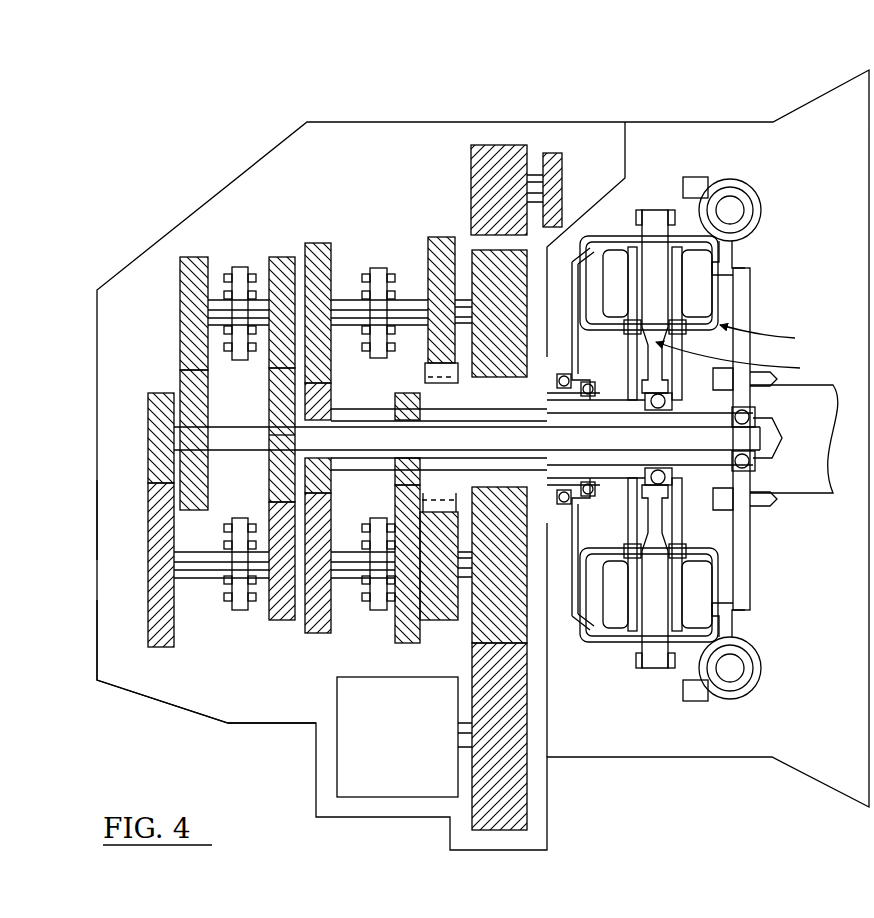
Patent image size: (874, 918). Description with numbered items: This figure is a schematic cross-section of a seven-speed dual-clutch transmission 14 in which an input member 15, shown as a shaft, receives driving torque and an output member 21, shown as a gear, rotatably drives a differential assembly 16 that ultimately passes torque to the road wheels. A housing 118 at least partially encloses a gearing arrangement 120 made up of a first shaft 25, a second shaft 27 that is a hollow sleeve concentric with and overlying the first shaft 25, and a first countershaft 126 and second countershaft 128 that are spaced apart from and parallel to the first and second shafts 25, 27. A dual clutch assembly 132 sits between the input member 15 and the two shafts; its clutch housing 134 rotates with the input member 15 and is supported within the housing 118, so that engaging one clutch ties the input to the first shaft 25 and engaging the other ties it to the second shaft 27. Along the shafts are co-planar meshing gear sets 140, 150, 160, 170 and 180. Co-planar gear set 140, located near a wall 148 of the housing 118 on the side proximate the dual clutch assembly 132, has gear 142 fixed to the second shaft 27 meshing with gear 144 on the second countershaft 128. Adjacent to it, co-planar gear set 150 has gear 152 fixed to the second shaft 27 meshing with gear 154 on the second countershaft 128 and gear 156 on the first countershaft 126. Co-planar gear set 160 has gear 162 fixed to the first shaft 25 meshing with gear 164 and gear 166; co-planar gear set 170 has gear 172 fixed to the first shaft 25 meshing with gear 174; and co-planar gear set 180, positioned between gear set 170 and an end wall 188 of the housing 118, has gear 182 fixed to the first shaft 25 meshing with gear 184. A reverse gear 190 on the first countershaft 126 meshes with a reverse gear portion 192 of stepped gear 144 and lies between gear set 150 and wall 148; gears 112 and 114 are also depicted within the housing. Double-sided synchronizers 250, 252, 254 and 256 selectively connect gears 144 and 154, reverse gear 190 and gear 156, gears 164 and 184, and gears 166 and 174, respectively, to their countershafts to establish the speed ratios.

The transmission 14 is at (227, 132).
The input member 15 is at (792, 498).
The differential assembly 16 is at (413, 750).
The output member 21 is at (530, 800).
The first shaft 25 is at (222, 452).
The second shaft 27 is at (362, 408).
The gear 112 is at (564, 165).
The gear 114 is at (469, 163).
The housing 118 is at (97, 318).
The gearing arrangement 120 is at (118, 642).
The first countershaft 126 is at (417, 300).
The second countershaft 128 is at (228, 603).
The dual clutch assembly 132 is at (688, 386).
The clutch housing 134 is at (642, 650).
The co-planar gear set 140 is at (395, 376).
The gear 142 is at (420, 405).
The gear 144 is at (407, 577).
The wall 148 is at (600, 210).
The co-planar gear set 150 is at (344, 285).
The gear 152 is at (293, 390).
The gear 154 is at (305, 633).
The gear 156 is at (332, 265).
The co-planar gear set 160 is at (254, 402).
The gear 162 is at (270, 398).
The gear 164 is at (243, 612).
The gear 166 is at (269, 275).
The co-planar gear set 170 is at (184, 336).
The gear 172 is at (208, 493).
The gear 174 is at (180, 275).
The co-planar gear set 180 is at (113, 495).
The gear 182 is at (148, 435).
The gear 184 is at (148, 600).
The end wall 188 is at (97, 525).
The reverse gear 190 is at (428, 258).
The reverse gear portion 192 is at (440, 620).
The synchronizer 250 is at (375, 612).
The synchronizer 252 is at (378, 262).
The synchronizer 254 is at (238, 612).
The synchronizer 256 is at (240, 313).